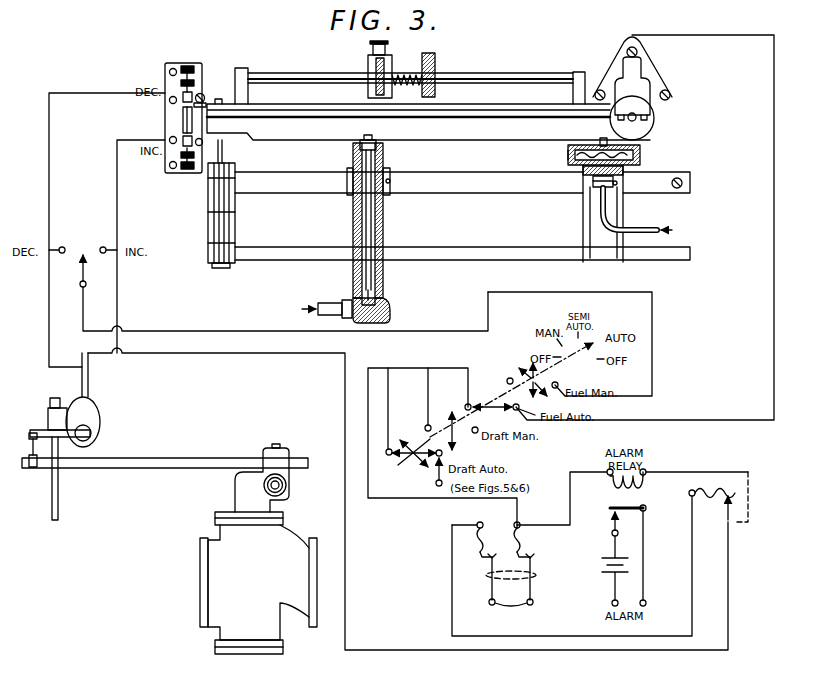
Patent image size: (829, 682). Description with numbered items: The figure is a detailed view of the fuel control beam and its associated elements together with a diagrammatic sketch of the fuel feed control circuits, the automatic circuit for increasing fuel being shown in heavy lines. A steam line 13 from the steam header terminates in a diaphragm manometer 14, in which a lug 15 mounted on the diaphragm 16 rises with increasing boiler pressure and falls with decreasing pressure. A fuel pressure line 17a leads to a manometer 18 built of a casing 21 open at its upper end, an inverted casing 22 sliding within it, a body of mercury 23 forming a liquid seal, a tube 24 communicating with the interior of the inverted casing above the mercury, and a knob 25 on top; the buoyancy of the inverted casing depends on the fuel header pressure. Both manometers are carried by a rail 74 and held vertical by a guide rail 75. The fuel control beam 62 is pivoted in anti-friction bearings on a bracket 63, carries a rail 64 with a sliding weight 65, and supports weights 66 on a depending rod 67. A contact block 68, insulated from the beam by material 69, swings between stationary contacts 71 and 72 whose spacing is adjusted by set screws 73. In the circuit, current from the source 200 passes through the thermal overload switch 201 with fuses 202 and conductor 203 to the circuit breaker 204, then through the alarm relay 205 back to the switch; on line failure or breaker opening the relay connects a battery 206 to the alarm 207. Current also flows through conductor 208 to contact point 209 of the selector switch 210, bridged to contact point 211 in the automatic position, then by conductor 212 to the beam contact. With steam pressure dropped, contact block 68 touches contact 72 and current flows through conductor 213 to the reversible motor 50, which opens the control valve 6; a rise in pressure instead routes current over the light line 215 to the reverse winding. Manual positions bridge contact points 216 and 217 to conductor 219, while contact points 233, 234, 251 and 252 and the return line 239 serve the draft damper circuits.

The control valve 6 is at (297, 548).
The steam line 13 is at (644, 233).
The diaphragm manometer 14 is at (642, 166).
The lug 15 is at (622, 156).
The diaphragm 16 is at (568, 156).
The fuel pressure line 17a is at (329, 310).
The manometer 18 is at (388, 241).
The casing 21 is at (384, 221).
The inverted casing 22 is at (380, 150).
The body of mercury 23 is at (384, 289).
The tube 24 is at (372, 174).
The knob 25 is at (360, 145).
The reversible motor 50 is at (98, 408).
The fuel control beam 62 is at (487, 117).
The bracket 63 is at (645, 96).
The rail 64 is at (483, 78).
The weight 65 is at (368, 60).
The weights 66 is at (208, 229).
The depending rod 67 is at (228, 160).
The contact block 68 is at (182, 118).
The insulating material 69 is at (201, 99).
The stationary contact 71 is at (197, 94).
The stationary contact 72 is at (185, 144).
The set screws 73 is at (189, 65).
The rail 74 is at (477, 179).
The guide rail 75 is at (460, 262).
The source of current 200 is at (533, 607).
The thermal overload switch 201 is at (490, 566).
The fuses 202 is at (484, 553).
The conductor 203 is at (452, 585).
The thermal overload circuit breaker 204 is at (700, 490).
The alarm relay 205 is at (607, 490).
The battery 206 is at (603, 570).
The alarm 207 is at (646, 604).
The conductor 208 is at (410, 500).
The contact point 209 is at (466, 405).
The selector switch 210 is at (404, 460).
The contact point 211 is at (520, 412).
The conductor 212 is at (690, 31).
The conductor 213 is at (117, 206).
The conductor 215 is at (49, 194).
The contact point 216 is at (507, 382).
The contact point 217 is at (570, 344).
The conductor 219 is at (187, 357).
The contact point 233 is at (384, 411).
The contact point 234 is at (428, 479).
The line 239 is at (418, 449).
The contact point 251 is at (425, 430).
The contact point 252 is at (511, 404).